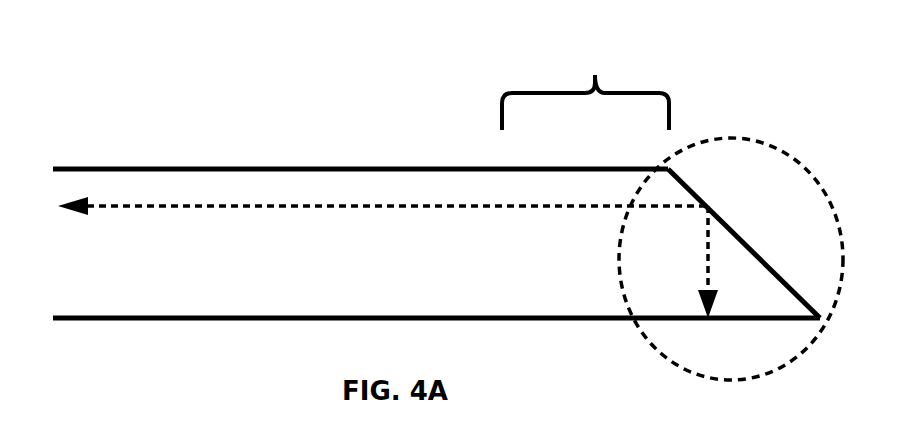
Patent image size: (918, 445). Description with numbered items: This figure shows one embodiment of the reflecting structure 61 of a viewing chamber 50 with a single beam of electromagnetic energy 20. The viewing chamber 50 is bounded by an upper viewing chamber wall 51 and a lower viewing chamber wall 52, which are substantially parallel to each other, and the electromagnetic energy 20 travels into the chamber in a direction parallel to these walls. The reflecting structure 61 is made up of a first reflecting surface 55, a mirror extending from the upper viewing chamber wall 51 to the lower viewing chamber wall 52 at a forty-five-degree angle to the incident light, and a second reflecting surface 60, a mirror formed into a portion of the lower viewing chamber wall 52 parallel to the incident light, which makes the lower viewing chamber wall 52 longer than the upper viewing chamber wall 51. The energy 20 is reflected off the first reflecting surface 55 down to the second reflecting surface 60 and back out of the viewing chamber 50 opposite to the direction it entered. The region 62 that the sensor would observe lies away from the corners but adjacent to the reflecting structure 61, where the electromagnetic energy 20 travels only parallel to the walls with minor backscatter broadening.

The electromagnetic energy 20 is at (92, 207).
The viewing chamber 50 is at (436, 253).
The upper viewing chamber wall 51 is at (270, 169).
The lower viewing chamber wall 52 is at (277, 319).
The first reflecting surface 55 is at (732, 226).
The second reflecting surface 60 is at (727, 320).
The reflecting structure 61 is at (685, 368).
The region 62 is at (595, 75).